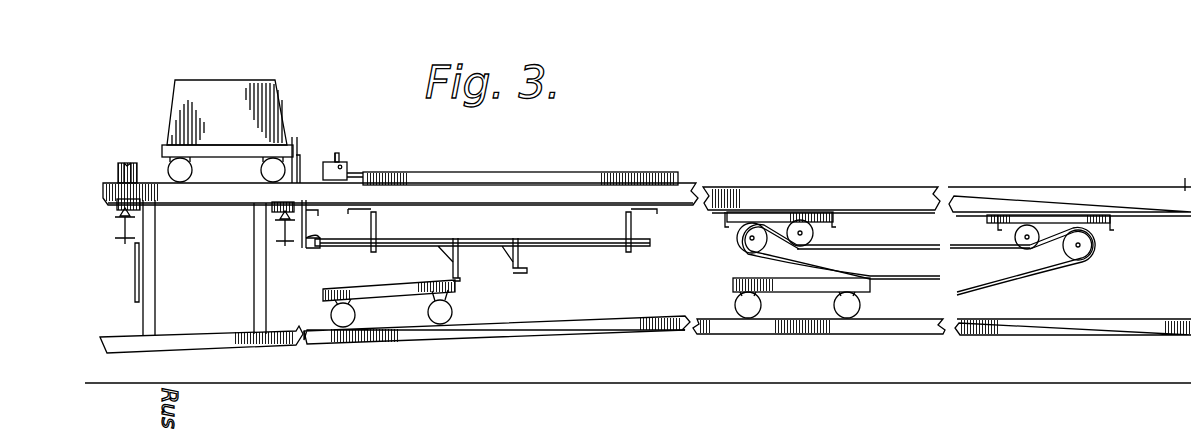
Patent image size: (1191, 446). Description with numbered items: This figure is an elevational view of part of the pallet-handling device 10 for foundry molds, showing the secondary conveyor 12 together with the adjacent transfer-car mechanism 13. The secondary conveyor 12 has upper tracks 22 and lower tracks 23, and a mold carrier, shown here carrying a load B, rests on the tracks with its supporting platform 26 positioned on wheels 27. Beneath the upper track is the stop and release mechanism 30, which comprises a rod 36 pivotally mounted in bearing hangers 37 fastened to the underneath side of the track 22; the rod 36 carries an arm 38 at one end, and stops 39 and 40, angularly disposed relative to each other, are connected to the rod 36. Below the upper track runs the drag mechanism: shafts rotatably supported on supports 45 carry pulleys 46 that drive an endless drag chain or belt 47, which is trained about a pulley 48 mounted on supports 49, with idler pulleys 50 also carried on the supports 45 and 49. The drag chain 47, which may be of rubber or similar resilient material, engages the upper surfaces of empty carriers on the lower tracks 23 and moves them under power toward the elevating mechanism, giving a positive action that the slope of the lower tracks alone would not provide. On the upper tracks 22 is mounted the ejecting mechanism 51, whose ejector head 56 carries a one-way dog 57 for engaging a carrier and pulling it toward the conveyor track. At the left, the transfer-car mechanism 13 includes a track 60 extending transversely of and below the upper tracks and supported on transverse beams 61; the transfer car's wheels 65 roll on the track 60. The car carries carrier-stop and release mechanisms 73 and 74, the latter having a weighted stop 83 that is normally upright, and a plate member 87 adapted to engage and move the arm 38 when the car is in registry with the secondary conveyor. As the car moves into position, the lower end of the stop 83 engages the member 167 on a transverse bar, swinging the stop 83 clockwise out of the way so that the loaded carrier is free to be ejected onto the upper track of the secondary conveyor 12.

The load box B is at (272, 93).
The pallet-handling device 10 is at (1150, 338).
The secondary conveyor 12 is at (741, 187).
The transfer-car mechanism 13 is at (187, 333).
The upper tracks 22 is at (1069, 190).
The lower tracks 23 is at (1100, 326).
The supporting platform 26 is at (165, 147).
The wheels 27 is at (432, 308).
The stop and release mechanism 30 is at (542, 243).
The rod 36 is at (588, 247).
The bearing hangers 37 is at (378, 230).
The arm 38 is at (322, 244).
The stop 39 is at (459, 260).
The stop 40 is at (517, 275).
The supports 45 is at (1114, 226).
The pulleys 46 is at (1088, 256).
The drag chain 47 is at (1052, 276).
The pulley 48 is at (750, 244).
The supports 49 is at (775, 212).
The idler pulleys 50 is at (806, 225).
The ejecting mechanism 51 is at (521, 174).
The ejector head 56 is at (352, 172).
The one-way dog 57 is at (340, 158).
The track 60 is at (130, 213).
The transverse beams 61 is at (124, 243).
The wheels 65 is at (118, 172).
The carrier-stop and release mechanism 73 is at (137, 274).
The carrier-stop and release mechanism 74 is at (298, 161).
The stop 83 is at (298, 142).
The plate member 87 is at (300, 196).
The member 167 is at (310, 210).